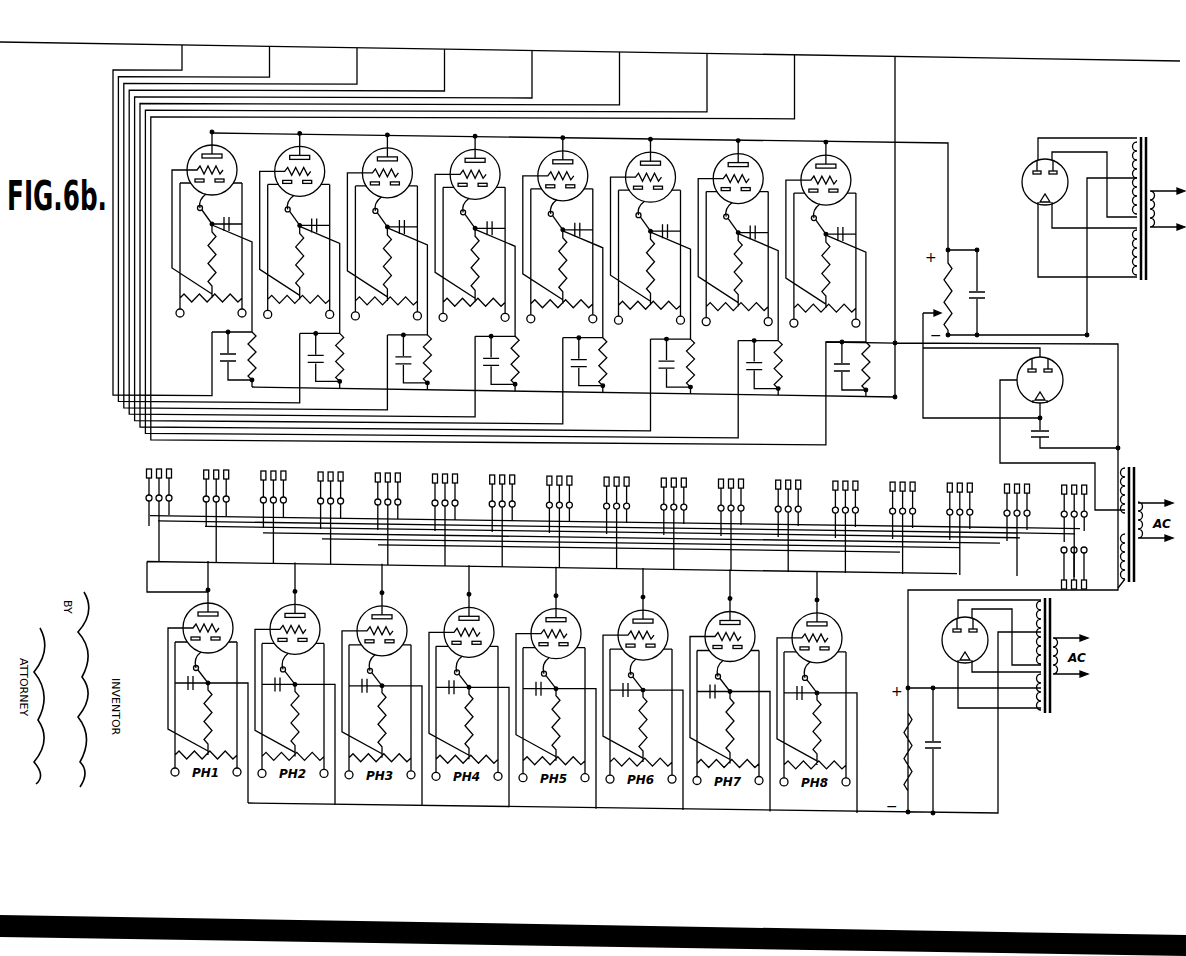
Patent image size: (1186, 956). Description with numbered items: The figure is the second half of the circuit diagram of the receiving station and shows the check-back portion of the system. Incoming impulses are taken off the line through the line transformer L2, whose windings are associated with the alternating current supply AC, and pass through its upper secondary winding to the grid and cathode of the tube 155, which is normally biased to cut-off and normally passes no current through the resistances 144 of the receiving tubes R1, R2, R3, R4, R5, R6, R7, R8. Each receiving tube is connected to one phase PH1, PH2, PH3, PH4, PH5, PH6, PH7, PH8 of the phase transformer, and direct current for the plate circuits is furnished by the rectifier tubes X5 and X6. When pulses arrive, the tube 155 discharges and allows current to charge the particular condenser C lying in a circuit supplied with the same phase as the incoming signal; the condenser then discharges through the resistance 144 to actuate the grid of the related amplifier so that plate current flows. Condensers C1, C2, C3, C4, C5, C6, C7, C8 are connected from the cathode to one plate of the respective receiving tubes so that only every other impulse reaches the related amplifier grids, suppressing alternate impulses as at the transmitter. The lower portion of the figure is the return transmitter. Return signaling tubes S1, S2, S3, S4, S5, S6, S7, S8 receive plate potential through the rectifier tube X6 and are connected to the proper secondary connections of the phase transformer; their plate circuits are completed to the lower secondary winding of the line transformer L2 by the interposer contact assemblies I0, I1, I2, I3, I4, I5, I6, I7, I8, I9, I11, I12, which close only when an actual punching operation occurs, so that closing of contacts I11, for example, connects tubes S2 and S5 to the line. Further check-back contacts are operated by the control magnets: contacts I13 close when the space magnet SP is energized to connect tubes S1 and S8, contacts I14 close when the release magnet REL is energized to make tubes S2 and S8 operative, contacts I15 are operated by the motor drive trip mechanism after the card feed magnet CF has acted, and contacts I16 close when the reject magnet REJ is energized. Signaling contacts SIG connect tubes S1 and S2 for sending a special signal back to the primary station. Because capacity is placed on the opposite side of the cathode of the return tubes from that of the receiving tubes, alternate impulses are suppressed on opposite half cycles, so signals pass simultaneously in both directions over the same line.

The receiving tube R1 is at (217, 155).
The receiving tube R2 is at (305, 156).
The receiving tube R3 is at (392, 158).
The receiving tube R4 is at (480, 159).
The receiving tube R5 is at (568, 161).
The receiving tube R6 is at (656, 162).
The receiving tube R7 is at (744, 164).
The receiving tube R8 is at (831, 165).
The condenser C1 is at (217, 209).
The condenser C2 is at (304, 210).
The condenser C3 is at (392, 212).
The condenser C4 is at (480, 213).
The condenser C5 is at (567, 215).
The condenser C6 is at (655, 216).
The condenser C7 is at (743, 218).
The condenser C8 is at (830, 219).
The transformer phase PH1 is at (212, 251).
The transformer phase PH2 is at (300, 252).
The transformer phase PH3 is at (387, 254).
The transformer phase PH4 is at (475, 255).
The transformer phase PH5 is at (563, 257).
The transformer phase PH6 is at (651, 258).
The transformer phase PH7 is at (738, 260).
The transformer phase PH8 is at (826, 261).
The resistance 144 is at (968, 358).
The condenser C is at (234, 365).
The rectifier tube X5 is at (1040, 188).
The rectifier tube X6 is at (945, 647).
The tube 155 is at (1060, 374).
The line transformer L2 is at (1138, 506).
The A. C. supply AC is at (1172, 211).
The interposer contact assembly I12 is at (159, 506).
The interposer contact assembly I11 is at (216, 507).
The interposer contact assembly I0 is at (273, 508).
The interposer contact assembly I1 is at (331, 509).
The interposer contact assembly I2 is at (388, 510).
The interposer contact assembly I3 is at (445, 511).
The interposer contact assembly I4 is at (502, 512).
The interposer contact assembly I5 is at (559, 513).
The interposer contact assembly I6 is at (617, 514).
The interposer contact assembly I7 is at (674, 515).
The interposer contact assembly I8 is at (731, 516).
The interposer contact assembly I9 is at (788, 517).
The contacts I13 is at (845, 518).
The contacts I14 is at (903, 519).
The contacts I15 is at (960, 520).
The contacts I16 is at (1017, 521).
The signaling contacts SIG is at (1084, 537).
The space magnet SP is at (864, 518).
The release magnet REL is at (924, 519).
The card feed magnet CF is at (978, 520).
The reject magnet REJ is at (1037, 521).
The return signaling tube S1 is at (217, 620).
The return signaling tube S2 is at (304, 622).
The return signaling tube S3 is at (391, 623).
The return signaling tube S4 is at (478, 625).
The return signaling tube S5 is at (565, 626).
The return signaling tube S6 is at (652, 627).
The return signaling tube S7 is at (740, 629).
The return signaling tube S8 is at (826, 630).